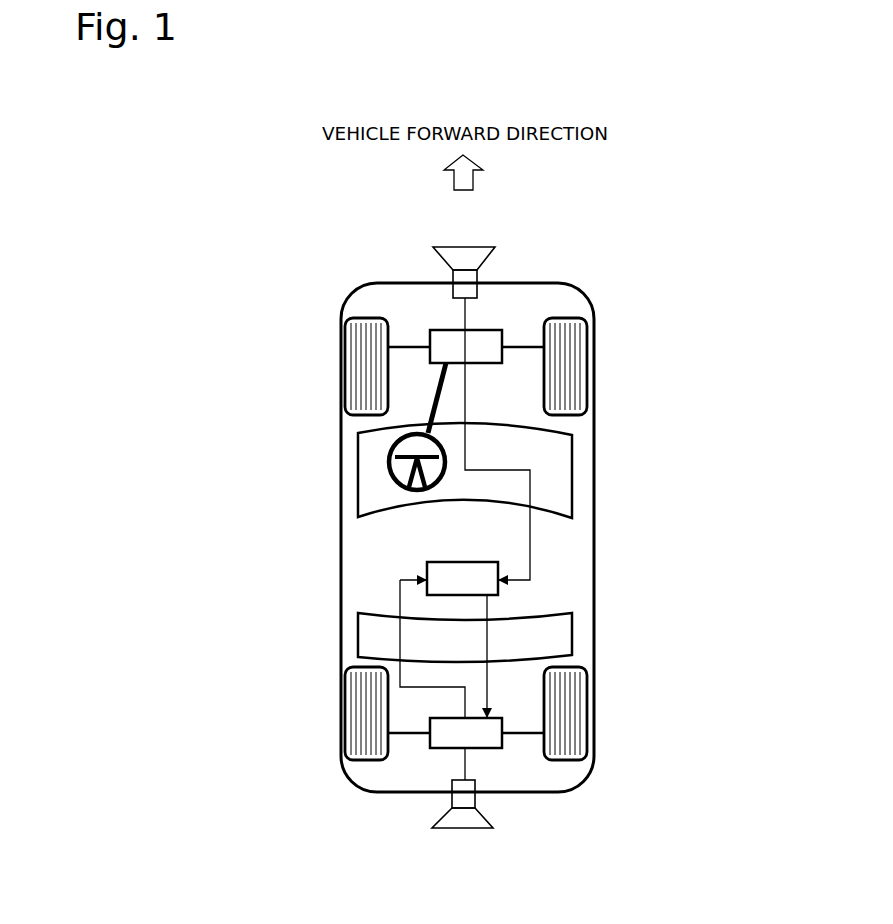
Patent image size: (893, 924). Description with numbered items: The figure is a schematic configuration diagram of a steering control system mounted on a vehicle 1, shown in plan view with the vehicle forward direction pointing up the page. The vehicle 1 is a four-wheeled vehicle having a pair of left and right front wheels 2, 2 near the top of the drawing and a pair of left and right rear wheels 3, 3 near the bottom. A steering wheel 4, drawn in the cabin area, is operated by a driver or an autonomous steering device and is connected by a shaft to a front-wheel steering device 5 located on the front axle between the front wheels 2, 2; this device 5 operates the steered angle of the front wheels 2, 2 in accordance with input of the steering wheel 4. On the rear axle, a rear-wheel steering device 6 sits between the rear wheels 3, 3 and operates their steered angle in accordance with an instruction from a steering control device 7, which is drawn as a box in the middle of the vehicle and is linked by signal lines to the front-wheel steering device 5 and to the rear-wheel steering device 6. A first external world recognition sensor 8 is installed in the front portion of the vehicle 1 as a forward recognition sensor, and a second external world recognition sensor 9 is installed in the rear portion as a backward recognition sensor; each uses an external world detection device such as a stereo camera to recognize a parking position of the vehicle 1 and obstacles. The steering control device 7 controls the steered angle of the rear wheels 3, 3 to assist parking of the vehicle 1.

The vehicle 1 is at (652, 460).
The front wheels 2 is at (347, 352).
The rear wheels 3 is at (342, 715).
The steering wheel 4 is at (392, 477).
The front-wheel steering device 5 is at (432, 327).
The rear-wheel steering device 6 is at (438, 753).
The steering control device 7 is at (462, 573).
The first external world recognition sensor 8 is at (483, 248).
The second external world recognition sensor 9 is at (490, 828).